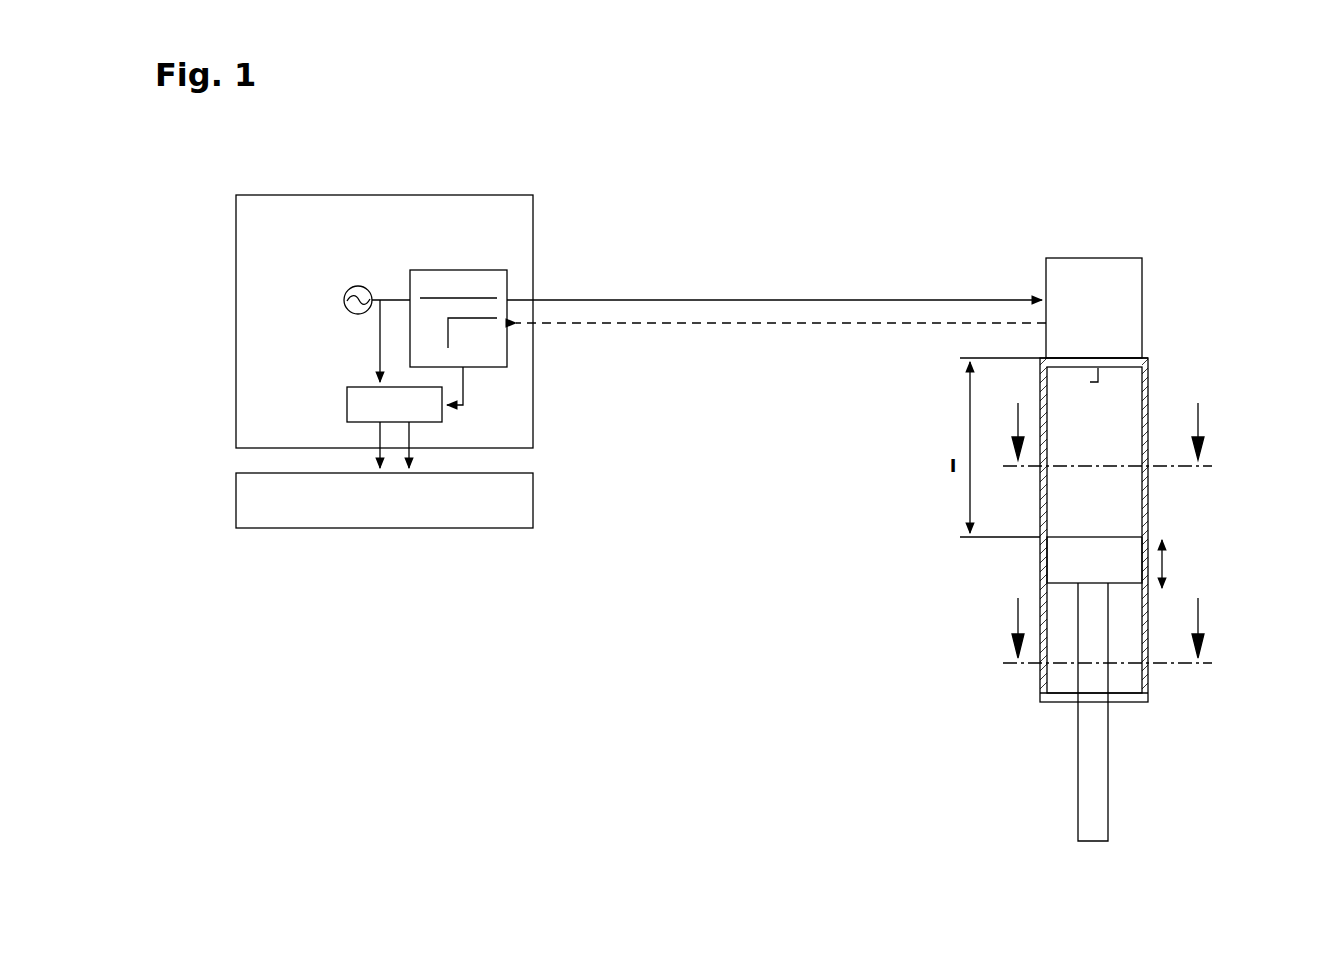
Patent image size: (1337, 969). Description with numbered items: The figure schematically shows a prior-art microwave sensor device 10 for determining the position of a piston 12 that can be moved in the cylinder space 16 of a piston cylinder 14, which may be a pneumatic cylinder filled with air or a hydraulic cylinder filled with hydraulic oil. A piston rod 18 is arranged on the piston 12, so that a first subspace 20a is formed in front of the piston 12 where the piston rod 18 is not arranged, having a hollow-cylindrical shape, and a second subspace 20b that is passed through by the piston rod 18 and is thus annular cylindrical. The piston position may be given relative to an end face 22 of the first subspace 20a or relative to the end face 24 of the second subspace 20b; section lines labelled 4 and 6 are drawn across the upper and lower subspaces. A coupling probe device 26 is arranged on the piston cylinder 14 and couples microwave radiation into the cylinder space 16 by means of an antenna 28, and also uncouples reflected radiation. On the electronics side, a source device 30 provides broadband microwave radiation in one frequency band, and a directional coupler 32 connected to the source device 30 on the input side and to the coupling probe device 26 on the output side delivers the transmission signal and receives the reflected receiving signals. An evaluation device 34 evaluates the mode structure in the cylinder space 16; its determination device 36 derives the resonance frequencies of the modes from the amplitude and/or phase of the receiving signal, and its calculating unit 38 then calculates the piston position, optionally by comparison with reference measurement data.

The microwave sensor device 10 is at (526, 175).
The piston 12 is at (1060, 568).
The piston cylinder 14 is at (1156, 483).
The cylinder space 16 is at (1126, 384).
The piston rod 18 is at (1097, 828).
The first subspace 20a is at (1130, 517).
The second subspace 20b is at (1125, 688).
The end face of the first subspace 22 is at (1121, 356).
The end face of the second subspace 24 is at (1132, 702).
The coupling probe device 26 is at (1122, 273).
The antenna 28 is at (1087, 383).
The source device 30 is at (358, 286).
The directional coupler 32 is at (458, 270).
The evaluation device 34 is at (480, 415).
The determination device 36 is at (347, 402).
The calculating unit 38 is at (456, 518).
The section line IV-IV 4 is at (1109, 434).
The section line VI-VI 6 is at (1109, 630).